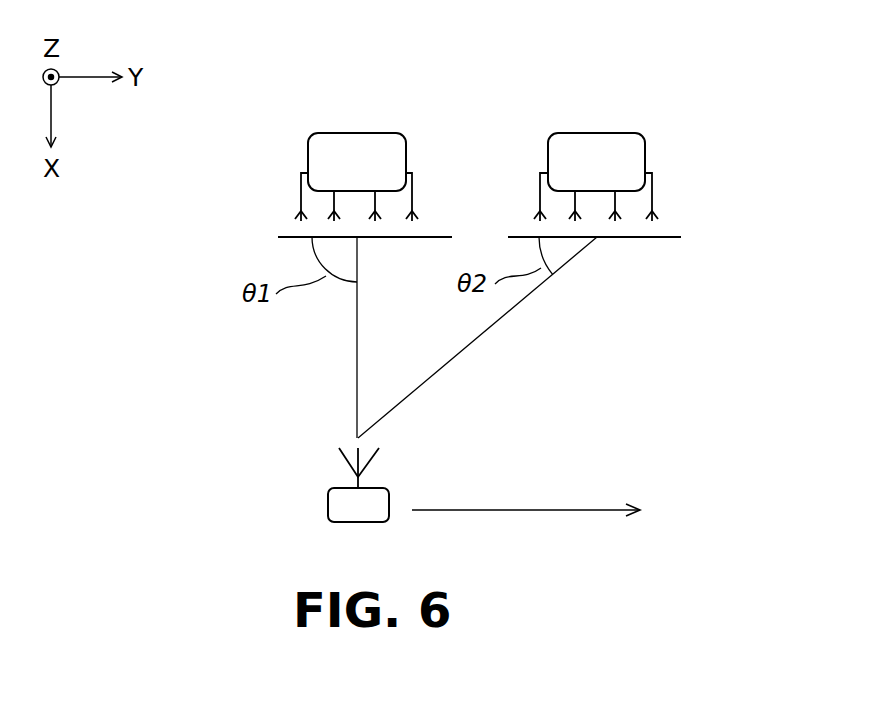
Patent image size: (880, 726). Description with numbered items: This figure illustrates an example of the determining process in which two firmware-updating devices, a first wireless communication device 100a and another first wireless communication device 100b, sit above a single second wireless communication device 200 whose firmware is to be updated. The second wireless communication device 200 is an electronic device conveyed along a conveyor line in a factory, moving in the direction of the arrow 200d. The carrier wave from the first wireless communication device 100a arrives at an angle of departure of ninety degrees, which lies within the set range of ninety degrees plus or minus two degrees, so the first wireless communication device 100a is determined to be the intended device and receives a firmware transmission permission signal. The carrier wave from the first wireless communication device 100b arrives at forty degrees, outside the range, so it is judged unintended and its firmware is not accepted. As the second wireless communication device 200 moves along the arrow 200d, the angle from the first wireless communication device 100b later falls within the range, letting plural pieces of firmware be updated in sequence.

The first wireless communication device 100a is at (406, 153).
The first wireless communication device 100b is at (645, 153).
The second wireless communication device 200 is at (389, 505).
The arrow 200d is at (553, 510).